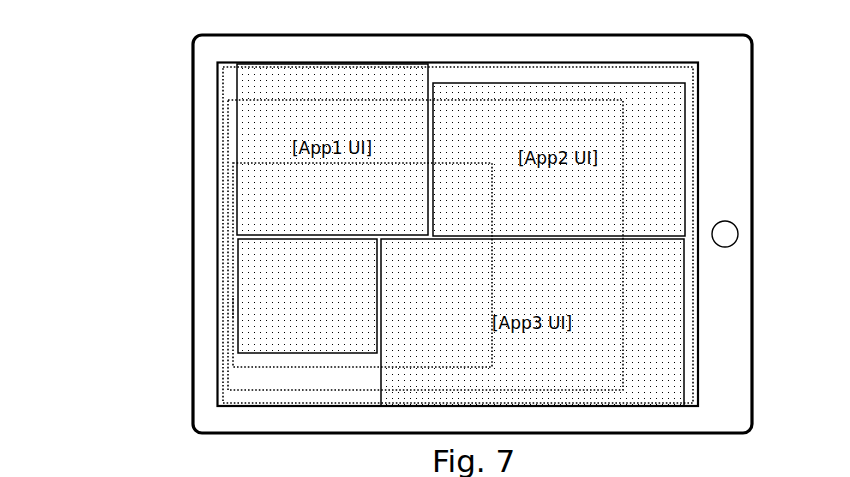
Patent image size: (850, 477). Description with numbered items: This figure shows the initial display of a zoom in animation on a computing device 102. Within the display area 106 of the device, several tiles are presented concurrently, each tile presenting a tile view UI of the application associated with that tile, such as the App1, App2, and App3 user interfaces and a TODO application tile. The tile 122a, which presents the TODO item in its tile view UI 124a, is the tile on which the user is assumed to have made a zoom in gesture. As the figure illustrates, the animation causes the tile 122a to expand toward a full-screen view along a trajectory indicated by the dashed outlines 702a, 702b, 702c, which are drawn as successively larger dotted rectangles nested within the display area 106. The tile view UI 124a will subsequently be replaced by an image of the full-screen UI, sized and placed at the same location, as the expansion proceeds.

The computing device 102 is at (752, 52).
The display area 106 is at (698, 100).
The dashed outline 702a is at (283, 367).
The dashed outline 702b is at (295, 389).
The dashed outline 702c is at (223, 79).
The tile view UI 124a is at (238, 262).
The tile 122a is at (237, 308).